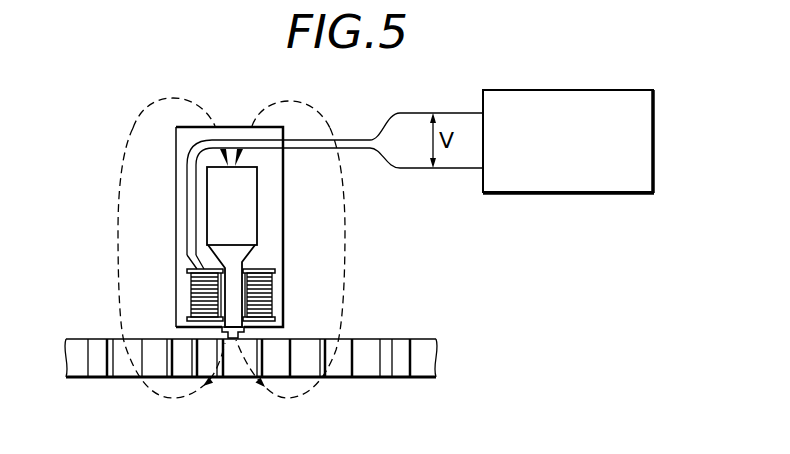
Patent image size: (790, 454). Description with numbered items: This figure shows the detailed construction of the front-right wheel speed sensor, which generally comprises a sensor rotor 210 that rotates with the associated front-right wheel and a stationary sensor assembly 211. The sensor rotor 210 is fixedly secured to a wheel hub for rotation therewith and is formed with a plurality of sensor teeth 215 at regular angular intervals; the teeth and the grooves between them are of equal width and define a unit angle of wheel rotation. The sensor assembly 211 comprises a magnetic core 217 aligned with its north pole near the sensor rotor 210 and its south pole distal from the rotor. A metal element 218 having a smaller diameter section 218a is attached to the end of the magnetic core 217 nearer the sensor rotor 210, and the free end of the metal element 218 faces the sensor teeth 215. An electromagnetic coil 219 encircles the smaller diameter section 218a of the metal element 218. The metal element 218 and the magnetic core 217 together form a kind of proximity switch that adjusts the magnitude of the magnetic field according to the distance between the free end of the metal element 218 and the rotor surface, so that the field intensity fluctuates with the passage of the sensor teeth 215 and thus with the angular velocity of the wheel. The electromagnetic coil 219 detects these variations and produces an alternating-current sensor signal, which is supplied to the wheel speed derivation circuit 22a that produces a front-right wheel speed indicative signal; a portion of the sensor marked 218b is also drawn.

The sensor rotor 210 is at (285, 337).
The sensor assembly 211 is at (231, 140).
The sensor teeth 215 is at (80, 368).
The magnetic core 217 is at (258, 258).
The metal element 218 is at (207, 197).
The smaller diameter section 218a is at (268, 300).
The permanent magnet 218b is at (247, 200).
The electromagnetic coil 219 is at (190, 285).
The wheel speed derivation circuit 22a is at (549, 90).